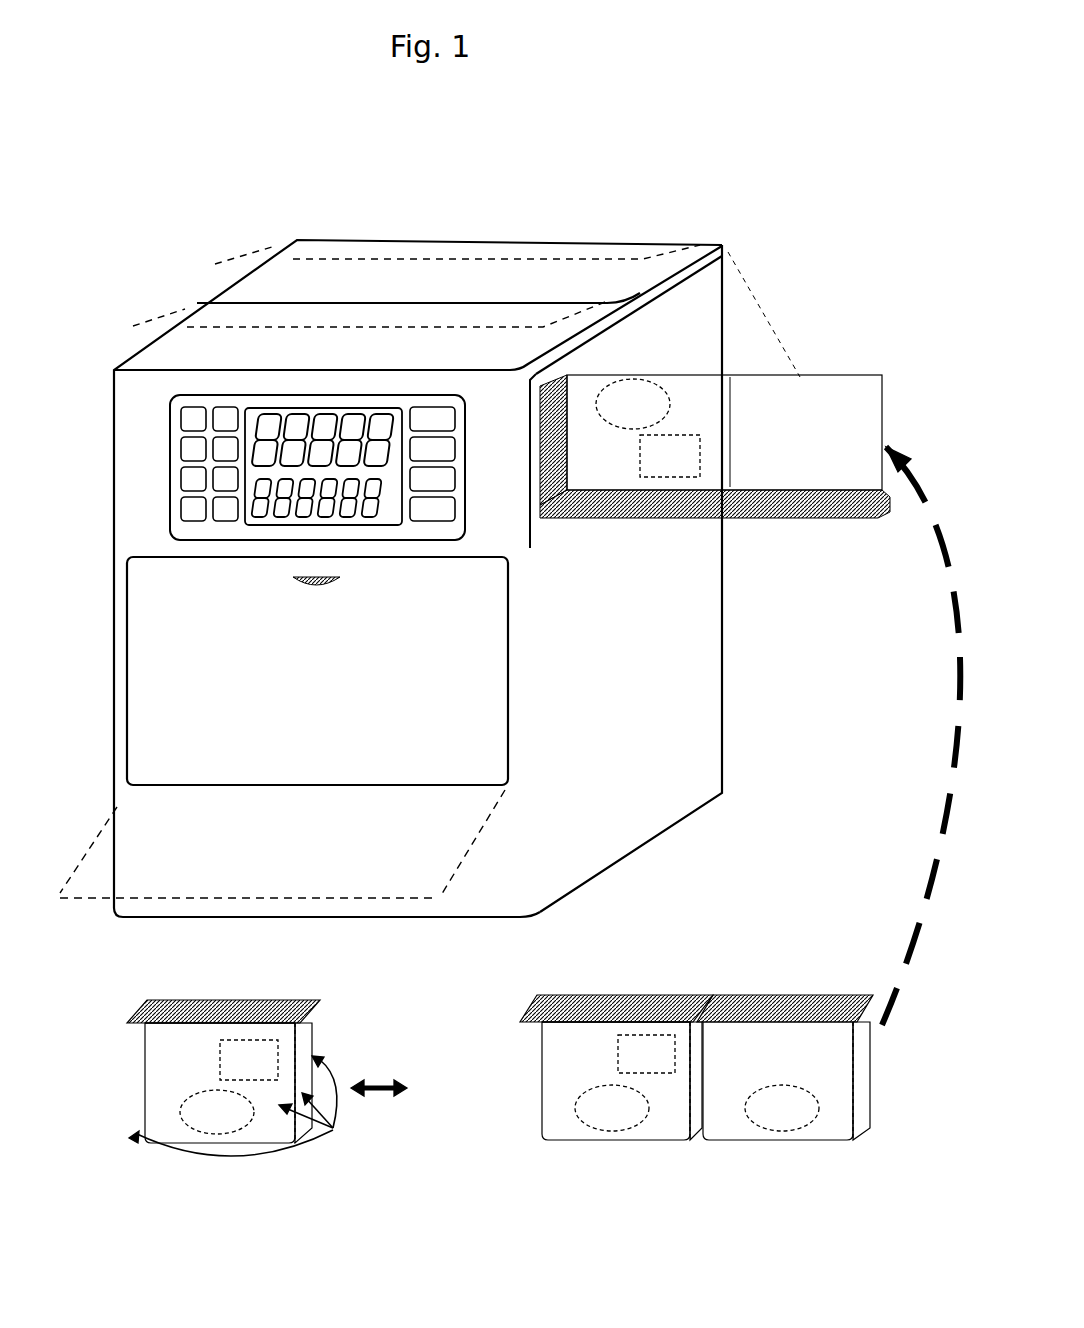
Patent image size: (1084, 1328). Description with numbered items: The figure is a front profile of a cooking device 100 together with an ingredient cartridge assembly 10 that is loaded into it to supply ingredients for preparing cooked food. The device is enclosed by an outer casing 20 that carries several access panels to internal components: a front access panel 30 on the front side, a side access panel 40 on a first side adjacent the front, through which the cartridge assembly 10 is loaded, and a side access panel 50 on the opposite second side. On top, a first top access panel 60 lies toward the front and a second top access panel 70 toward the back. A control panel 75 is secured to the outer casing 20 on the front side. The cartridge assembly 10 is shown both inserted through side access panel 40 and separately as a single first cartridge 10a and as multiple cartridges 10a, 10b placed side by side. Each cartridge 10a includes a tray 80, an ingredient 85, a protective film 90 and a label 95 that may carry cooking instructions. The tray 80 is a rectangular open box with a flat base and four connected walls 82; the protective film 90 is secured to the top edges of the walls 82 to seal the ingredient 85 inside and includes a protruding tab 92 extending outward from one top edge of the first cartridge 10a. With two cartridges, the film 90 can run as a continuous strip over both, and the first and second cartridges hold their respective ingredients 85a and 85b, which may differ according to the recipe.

The cooking device 100 is at (220, 200).
The side access panel 50 is at (95, 433).
The second top access panel 70 is at (413, 285).
The first top access panel 60 is at (369, 358).
The side access panel 40 is at (670, 325).
The control panel 75 is at (253, 474).
The front access panel 30 is at (303, 700).
The outer casing 20 is at (553, 662).
The ingredient cartridge assembly 10 is at (882, 525).
The first cartridge 10a is at (152, 987).
The second cartridge 10b is at (718, 983).
The protruding tab 92 is at (130, 1025).
The protective film 90 is at (190, 1028).
The label 95 is at (243, 1058).
The tray 80 is at (163, 1102).
The ingredient 85 is at (200, 1110).
The ingredient 85a is at (597, 1113).
The ingredient 85b is at (795, 1115).
The walls 82 is at (247, 1106).